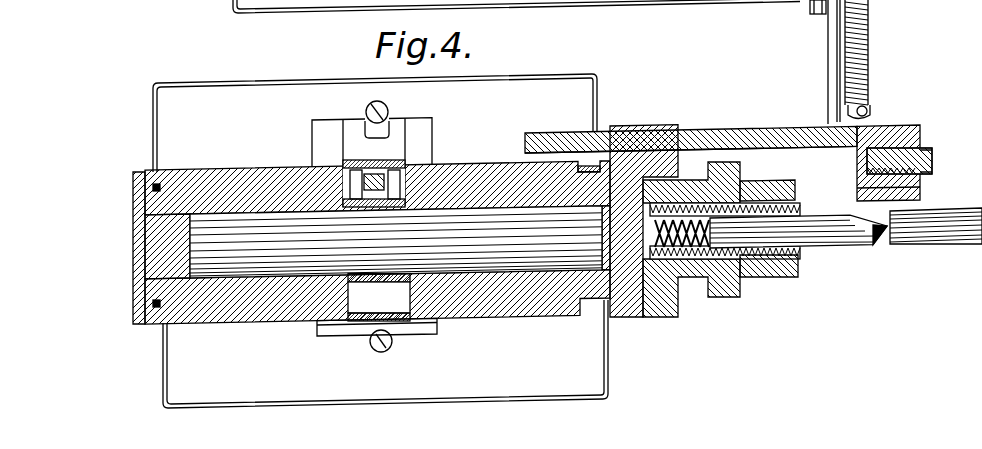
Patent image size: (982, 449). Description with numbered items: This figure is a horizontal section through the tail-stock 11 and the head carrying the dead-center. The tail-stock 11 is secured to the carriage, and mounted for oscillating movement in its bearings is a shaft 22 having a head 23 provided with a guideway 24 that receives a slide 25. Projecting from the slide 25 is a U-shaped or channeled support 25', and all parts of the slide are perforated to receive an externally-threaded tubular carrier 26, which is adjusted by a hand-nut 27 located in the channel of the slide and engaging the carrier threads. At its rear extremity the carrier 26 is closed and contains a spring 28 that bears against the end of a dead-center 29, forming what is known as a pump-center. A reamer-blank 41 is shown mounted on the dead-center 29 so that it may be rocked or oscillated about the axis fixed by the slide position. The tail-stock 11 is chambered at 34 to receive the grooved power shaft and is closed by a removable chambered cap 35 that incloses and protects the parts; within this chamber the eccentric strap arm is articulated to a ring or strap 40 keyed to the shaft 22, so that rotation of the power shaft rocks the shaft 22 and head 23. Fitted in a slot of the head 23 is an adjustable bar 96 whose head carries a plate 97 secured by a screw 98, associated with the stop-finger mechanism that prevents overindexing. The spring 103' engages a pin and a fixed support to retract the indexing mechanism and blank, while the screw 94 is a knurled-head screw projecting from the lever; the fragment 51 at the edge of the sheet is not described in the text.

The tail-stock 11 is at (380, 241).
The shaft 22 is at (396, 242).
The head 23 is at (648, 312).
The guideway 24 is at (653, 167).
The slide 25 is at (721, 252).
The channeled support 25' is at (768, 174).
The tubular carrier 26 is at (800, 208).
The hand-nut 27 is at (742, 283).
The spring 28 is at (682, 228).
The dead-center 29 is at (833, 240).
The chamber 34 is at (440, 317).
The chambered cap 35 is at (363, 327).
The ring or strap 40 is at (413, 309).
The reamer-blank 41 is at (953, 234).
The adjustable bar 96 is at (875, 189).
The plate 97 is at (909, 124).
The screw 98 is at (928, 160).
The spring 103' is at (885, 59).
The screw 94 is at (76, 8).
The part of adjacent figure 51 is at (122, 8).